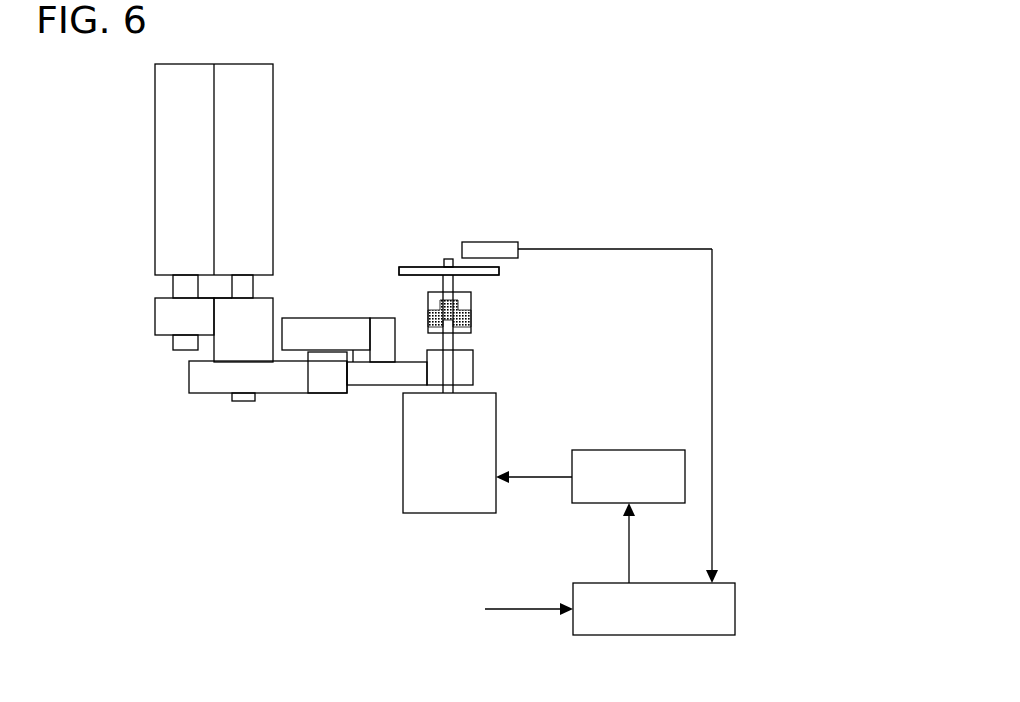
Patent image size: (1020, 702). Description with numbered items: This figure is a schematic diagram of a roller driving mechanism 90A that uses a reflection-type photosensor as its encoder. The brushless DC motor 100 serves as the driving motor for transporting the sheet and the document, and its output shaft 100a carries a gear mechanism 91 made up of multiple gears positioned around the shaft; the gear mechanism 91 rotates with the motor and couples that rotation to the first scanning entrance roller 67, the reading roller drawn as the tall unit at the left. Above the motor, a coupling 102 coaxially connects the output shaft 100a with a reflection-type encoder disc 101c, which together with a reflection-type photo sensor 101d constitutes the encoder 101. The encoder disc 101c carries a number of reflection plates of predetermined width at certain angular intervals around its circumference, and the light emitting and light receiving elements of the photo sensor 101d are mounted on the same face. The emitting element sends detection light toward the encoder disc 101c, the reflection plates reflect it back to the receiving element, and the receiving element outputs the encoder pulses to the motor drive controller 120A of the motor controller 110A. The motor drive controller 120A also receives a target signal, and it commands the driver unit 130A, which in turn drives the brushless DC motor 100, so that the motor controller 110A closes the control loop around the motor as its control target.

The first scanning entrance roller 67 is at (273, 165).
The gear mechanism 91 is at (279, 411).
The encoder 101 is at (441, 239).
The reflection-type encoder disc 101c is at (499, 272).
The reflection-type photo sensor 101d is at (496, 241).
The output shaft 100a is at (453, 343).
The coupling 102 is at (471, 316).
The brushless DC motor 100 is at (496, 440).
The driver unit 130A is at (647, 449).
The motor drive controller 120A is at (735, 609).
The motor controller 110A is at (735, 432).
The roller driving mechanism 90A is at (531, 140).